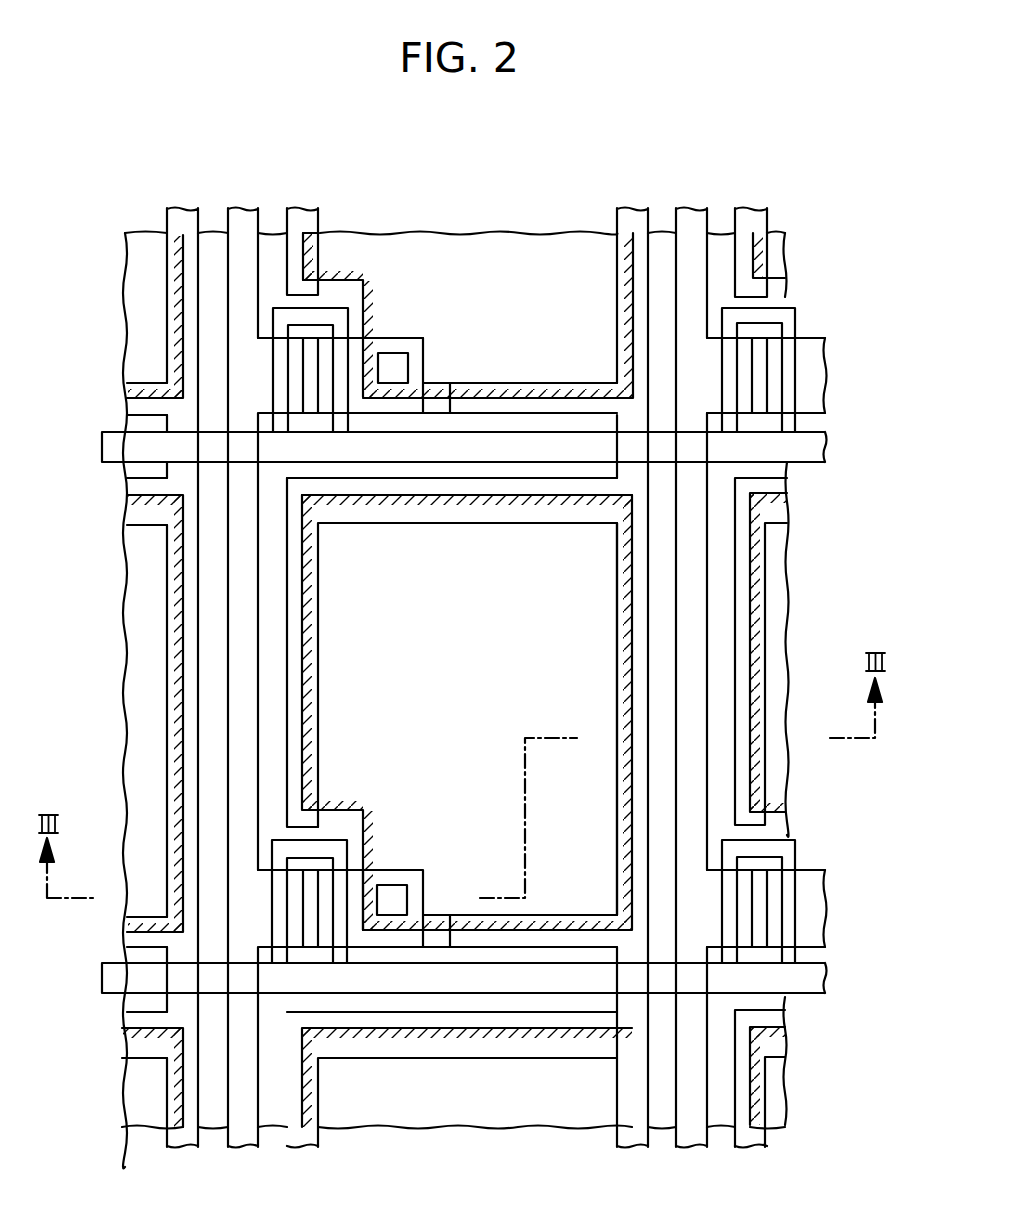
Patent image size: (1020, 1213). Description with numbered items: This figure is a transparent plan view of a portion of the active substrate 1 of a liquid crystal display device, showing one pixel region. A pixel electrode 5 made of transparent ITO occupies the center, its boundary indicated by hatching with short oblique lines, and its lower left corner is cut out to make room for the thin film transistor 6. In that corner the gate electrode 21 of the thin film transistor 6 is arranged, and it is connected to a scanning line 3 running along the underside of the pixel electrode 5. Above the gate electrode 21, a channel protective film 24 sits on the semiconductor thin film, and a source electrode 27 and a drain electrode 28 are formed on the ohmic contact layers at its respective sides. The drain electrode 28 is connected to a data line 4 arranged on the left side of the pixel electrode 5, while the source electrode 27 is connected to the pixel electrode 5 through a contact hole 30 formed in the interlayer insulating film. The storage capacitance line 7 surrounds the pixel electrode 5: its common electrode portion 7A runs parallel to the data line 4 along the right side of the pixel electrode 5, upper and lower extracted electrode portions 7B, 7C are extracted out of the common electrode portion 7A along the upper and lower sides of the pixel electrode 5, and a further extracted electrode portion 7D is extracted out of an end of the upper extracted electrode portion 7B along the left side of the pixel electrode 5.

The active substrate 1 is at (539, 233).
The scanning line 3 is at (102, 445).
The data line 4 is at (245, 215).
The pixel electrode 5 is at (472, 680).
The thin film transistor 6 is at (359, 970).
The storage capacitance line 7 is at (185, 213).
The common electrode portion 7A is at (622, 603).
The upper extracted electrode portion 7B is at (492, 515).
The lower extracted electrode portion 7C is at (567, 912).
The extracted electrode portion 7D is at (313, 585).
The gate electrode 21 is at (335, 848).
The channel protective film 24 is at (311, 953).
The source electrode 27 is at (374, 938).
The drain electrode 28 is at (295, 940).
The contact hole 30 is at (393, 913).